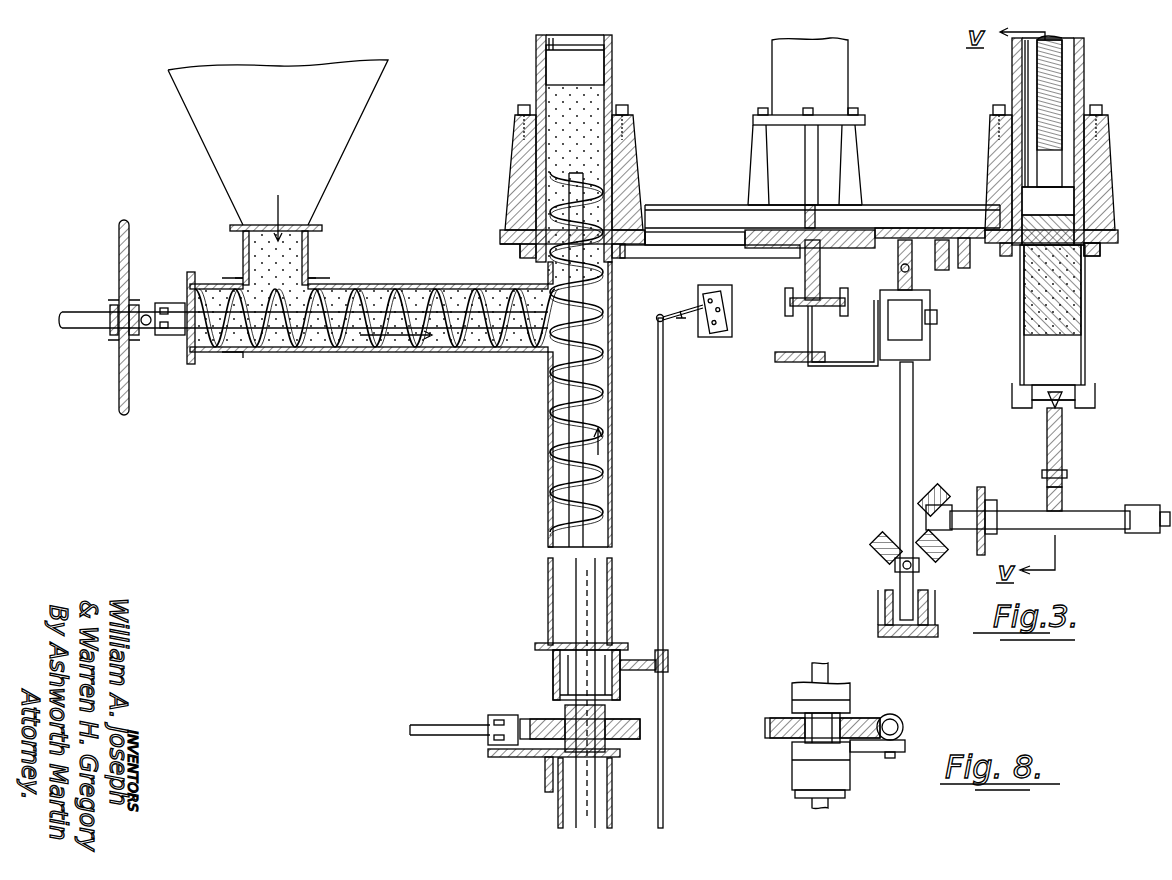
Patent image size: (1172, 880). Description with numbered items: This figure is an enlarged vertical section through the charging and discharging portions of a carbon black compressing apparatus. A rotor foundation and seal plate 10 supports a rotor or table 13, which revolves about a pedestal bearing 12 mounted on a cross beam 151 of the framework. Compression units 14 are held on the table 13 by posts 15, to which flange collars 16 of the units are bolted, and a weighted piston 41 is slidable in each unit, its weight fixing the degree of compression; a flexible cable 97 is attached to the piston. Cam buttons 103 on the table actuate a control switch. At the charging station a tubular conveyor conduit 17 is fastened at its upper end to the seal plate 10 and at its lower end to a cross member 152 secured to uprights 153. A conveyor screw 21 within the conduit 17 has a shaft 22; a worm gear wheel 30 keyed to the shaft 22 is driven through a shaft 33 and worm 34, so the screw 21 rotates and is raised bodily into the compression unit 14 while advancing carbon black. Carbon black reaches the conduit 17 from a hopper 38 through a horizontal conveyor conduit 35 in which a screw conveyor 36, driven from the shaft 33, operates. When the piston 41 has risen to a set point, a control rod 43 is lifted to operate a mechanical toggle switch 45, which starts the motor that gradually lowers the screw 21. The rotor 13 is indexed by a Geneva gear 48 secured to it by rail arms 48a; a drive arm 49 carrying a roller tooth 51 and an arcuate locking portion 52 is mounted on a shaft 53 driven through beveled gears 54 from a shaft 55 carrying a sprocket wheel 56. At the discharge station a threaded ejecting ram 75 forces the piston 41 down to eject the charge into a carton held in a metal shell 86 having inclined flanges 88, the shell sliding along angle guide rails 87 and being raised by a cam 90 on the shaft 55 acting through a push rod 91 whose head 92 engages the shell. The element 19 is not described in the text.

In FIG. 3, the rotor foundation and seal plate 10 is at (641, 258).
In FIG. 3, the pedestal bearing 12 is at (805, 264).
In FIG. 3, the rotor or table 13 is at (641, 238).
In FIG. 3, the compression unit 14 is at (607, 96).
In FIG. 3, the post 15 is at (522, 172).
In FIG. 3, the flange collar 16 is at (628, 118).
In FIG. 3, the tubular conveyor conduit 17 is at (612, 421).
In FIG. 3, the bracket 19 is at (520, 760).
In FIG. 3, the conveyor screw 21 is at (596, 393).
In FIG. 3, the shaft 22 is at (592, 809).
In FIG. 8, the shaft 22 is at (830, 804).
In FIG. 3, the worm gear wheel 30 is at (614, 740).
In FIG. 8, the worm gear wheel 30 is at (860, 722).
In FIG. 3, the shaft 33 is at (445, 725).
In FIG. 8, the shaft 33 is at (902, 723).
In FIG. 8, the worm 34 is at (904, 730).
In FIG. 3, the horizontal conveyor conduit 35 is at (385, 284).
In FIG. 3, the screw conveyor 36 is at (396, 296).
In FIG. 3, the hopper or storage bin 38 is at (208, 130).
In FIG. 3, the piston 41 is at (600, 62).
In FIG. 3, the control rod 43 is at (665, 703).
In FIG. 3, the mechanical toggle switch 45 is at (716, 338).
In FIG. 3, the Geneva gear or slotted plate 48 is at (840, 240).
In FIG. 3, the rail arm 48a is at (715, 212).
In FIG. 3, the Geneva drive member or arm 49 is at (944, 262).
In FIG. 3, the roller tooth 51 is at (968, 248).
In FIG. 3, the arcuate locking portion 52 is at (870, 248).
In FIG. 3, the shaft 53 is at (913, 400).
In FIG. 3, the beveled gears 54 is at (916, 536).
In FIG. 3, the shaft 55 is at (1020, 511).
In FIG. 3, the sprocket wheel 56 is at (978, 500).
In FIG. 3, the threaded ejecting ram 75 is at (1045, 84).
In FIG. 3, the metal shell 86 is at (1085, 332).
In FIG. 3, the angle guide rail 87 is at (1015, 404).
In FIG. 3, the inclined flange 88 is at (1086, 250).
In FIG. 3, the cam 90 is at (1063, 500).
In FIG. 3, the push rod 91 is at (1063, 446).
In FIG. 3, the head 92 is at (1040, 410).
In FIG. 3, the flexible cable 97 is at (538, 45).
In FIG. 3, the cam button or knob 103 is at (500, 237).
In FIG. 3, the cross beam 151 is at (808, 333).
In FIG. 3, the cross member 152 is at (540, 646).
In FIG. 3, the upright 153 is at (570, 660).